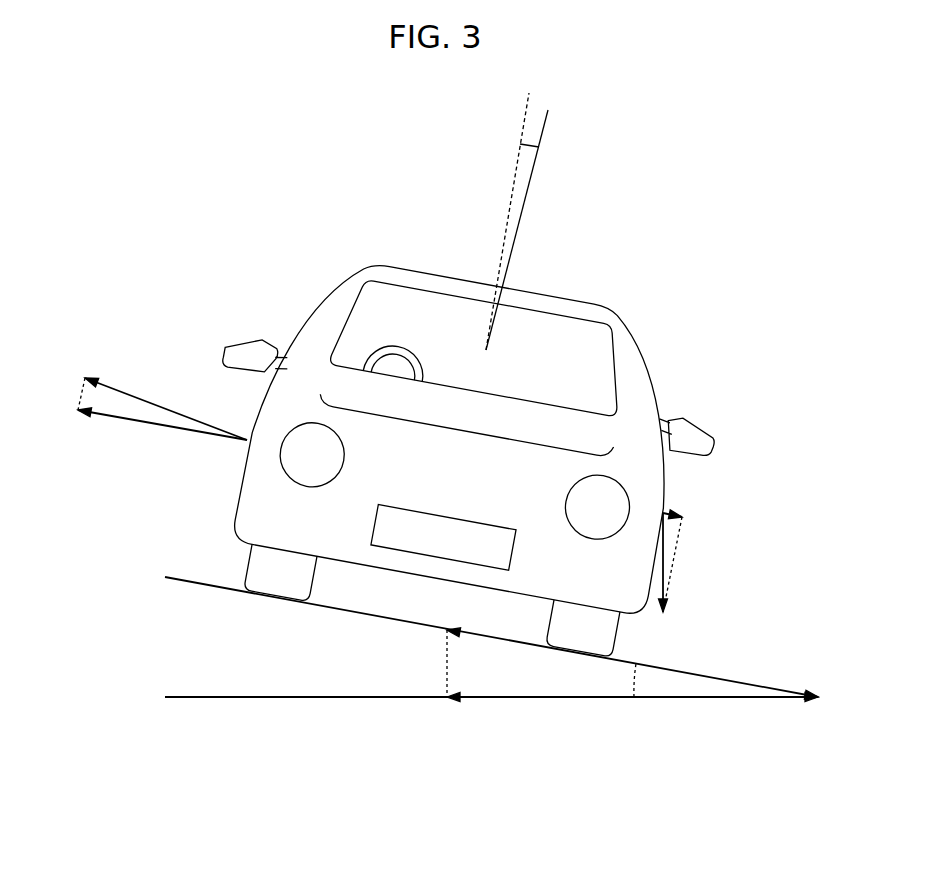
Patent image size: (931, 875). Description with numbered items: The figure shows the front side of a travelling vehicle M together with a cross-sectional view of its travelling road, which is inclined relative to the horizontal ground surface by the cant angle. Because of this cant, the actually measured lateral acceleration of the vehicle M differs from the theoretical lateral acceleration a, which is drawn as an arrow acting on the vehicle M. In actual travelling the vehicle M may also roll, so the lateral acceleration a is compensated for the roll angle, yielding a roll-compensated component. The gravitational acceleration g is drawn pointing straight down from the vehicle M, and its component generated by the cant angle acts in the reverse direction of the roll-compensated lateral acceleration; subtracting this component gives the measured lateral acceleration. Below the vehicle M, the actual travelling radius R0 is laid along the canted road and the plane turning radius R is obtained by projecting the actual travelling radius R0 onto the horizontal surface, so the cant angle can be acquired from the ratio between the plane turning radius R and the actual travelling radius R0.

The vehicle M is at (573, 295).
The lateral acceleration a is at (161, 398).
The gravitational acceleration g is at (662, 575).
The actual travelling radius R0 is at (480, 637).
The plane turning radius R is at (485, 700).